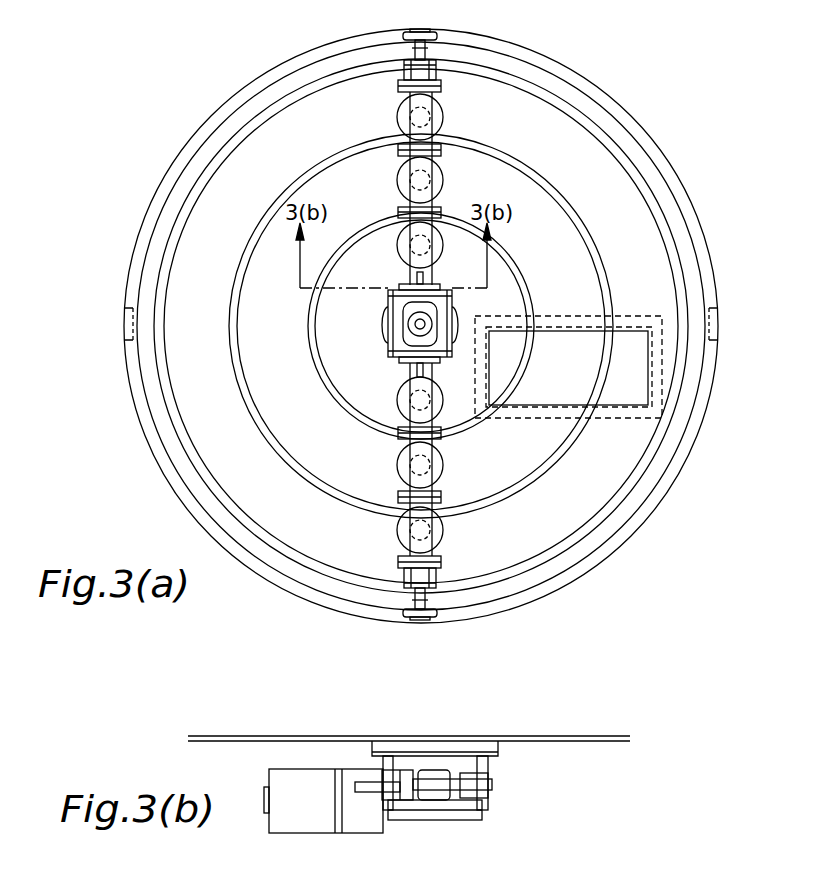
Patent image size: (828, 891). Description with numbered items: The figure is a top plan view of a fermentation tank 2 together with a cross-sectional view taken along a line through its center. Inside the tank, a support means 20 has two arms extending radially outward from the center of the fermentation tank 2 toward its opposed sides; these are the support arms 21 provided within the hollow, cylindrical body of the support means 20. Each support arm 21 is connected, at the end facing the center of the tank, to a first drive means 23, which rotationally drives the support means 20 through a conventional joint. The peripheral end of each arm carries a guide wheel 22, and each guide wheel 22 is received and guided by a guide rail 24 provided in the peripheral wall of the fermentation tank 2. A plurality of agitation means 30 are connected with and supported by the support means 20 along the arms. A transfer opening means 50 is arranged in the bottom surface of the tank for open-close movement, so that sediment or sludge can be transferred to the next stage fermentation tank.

The fermentation tank 2 is at (232, 68).
The support means 20 is at (455, 79).
The support arm 21 is at (426, 48).
The guide wheel 22 is at (421, 32).
The first drive means 23 is at (403, 337).
The guide rail 24 is at (307, 50).
The agitation means 30 is at (387, 547).
The transfer opening means 50 is at (662, 388).